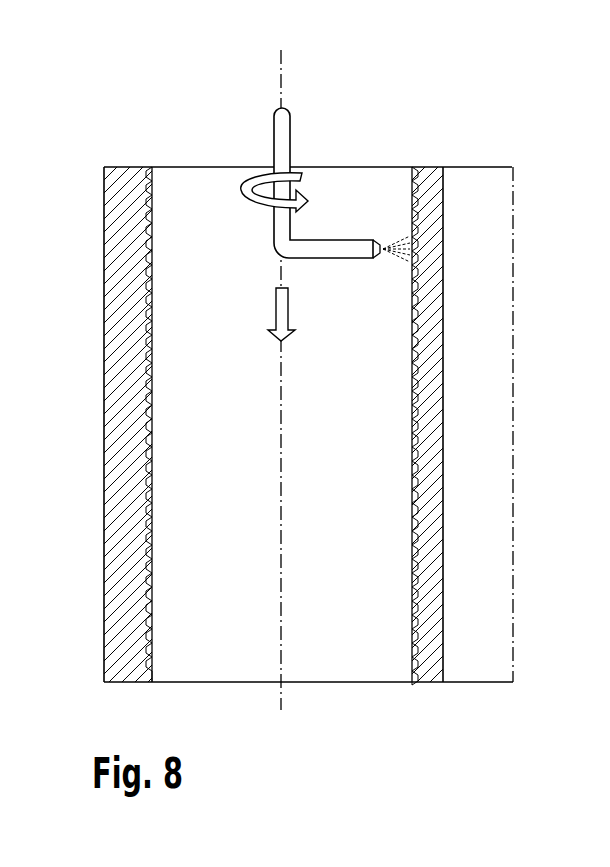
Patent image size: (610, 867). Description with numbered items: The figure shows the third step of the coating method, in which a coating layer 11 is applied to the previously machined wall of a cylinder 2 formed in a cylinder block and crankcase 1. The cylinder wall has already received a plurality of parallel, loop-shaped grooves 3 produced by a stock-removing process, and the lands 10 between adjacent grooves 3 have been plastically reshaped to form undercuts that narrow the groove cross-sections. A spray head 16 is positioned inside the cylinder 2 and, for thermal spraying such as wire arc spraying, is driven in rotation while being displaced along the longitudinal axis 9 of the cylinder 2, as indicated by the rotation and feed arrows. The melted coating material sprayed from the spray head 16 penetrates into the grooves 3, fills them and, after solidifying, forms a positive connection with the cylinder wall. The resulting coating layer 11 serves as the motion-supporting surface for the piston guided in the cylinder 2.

The cylinder block and crankcase 1 is at (128, 228).
The cylinder 2 is at (193, 197).
The grooves 3 is at (420, 180).
The longitudinal axis 9 is at (280, 63).
The lands 10 is at (420, 195).
The coating layer 11 is at (413, 183).
The spray head 16 is at (286, 127).